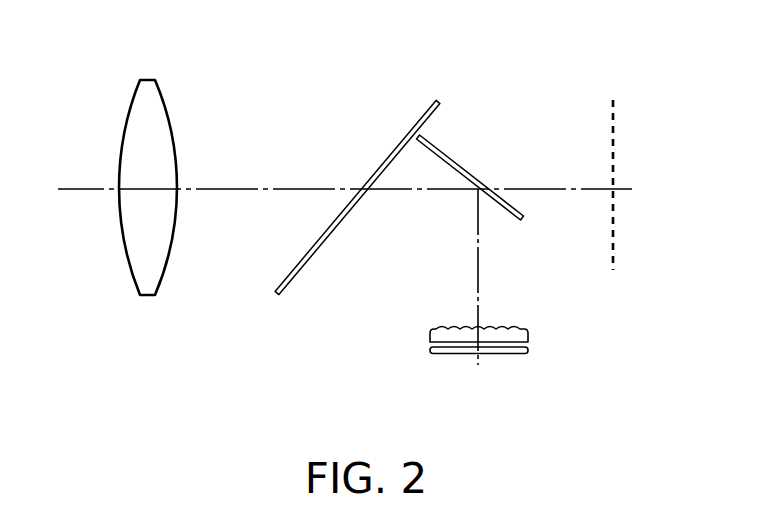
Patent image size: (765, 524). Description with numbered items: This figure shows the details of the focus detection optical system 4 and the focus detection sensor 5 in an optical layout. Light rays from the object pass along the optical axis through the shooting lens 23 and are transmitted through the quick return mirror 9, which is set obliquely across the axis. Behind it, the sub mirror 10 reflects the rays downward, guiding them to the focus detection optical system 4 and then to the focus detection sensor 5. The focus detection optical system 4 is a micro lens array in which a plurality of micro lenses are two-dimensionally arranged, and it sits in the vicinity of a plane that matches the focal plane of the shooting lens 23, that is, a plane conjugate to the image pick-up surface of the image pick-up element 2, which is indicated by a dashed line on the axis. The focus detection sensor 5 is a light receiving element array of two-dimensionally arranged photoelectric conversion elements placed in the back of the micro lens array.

The shooting lens 23 is at (148, 78).
The quick return mirror 9 is at (420, 118).
The sub mirror 10 is at (455, 157).
The focus detection optical system 4 is at (528, 338).
The focus detection sensor 5 is at (528, 349).
The image pick-up element 2 is at (613, 100).